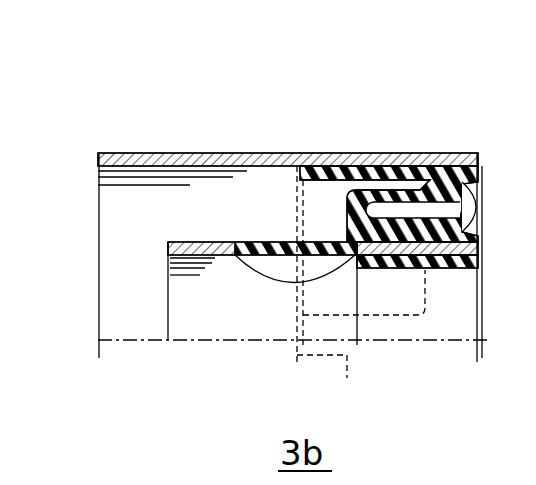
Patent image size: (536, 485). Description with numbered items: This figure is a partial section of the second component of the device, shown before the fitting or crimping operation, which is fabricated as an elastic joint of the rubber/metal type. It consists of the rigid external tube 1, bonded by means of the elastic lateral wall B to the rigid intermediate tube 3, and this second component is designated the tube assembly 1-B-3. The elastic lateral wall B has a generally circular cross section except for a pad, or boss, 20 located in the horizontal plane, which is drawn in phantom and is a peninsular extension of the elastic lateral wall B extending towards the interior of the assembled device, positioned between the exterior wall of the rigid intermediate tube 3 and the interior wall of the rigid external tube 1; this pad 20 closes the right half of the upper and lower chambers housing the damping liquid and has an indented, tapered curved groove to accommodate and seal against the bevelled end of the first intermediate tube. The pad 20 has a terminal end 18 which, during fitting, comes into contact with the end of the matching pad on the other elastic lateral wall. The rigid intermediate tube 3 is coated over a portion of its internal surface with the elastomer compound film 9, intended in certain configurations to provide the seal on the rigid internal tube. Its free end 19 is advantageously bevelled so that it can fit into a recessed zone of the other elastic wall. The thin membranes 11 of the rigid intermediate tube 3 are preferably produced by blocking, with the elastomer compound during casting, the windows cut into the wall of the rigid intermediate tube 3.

The rigid external tube 1 is at (178, 152).
The thin membranes 11 is at (263, 232).
The free end 19 is at (186, 262).
The end of the pad 18 is at (292, 332).
The pad 20 is at (338, 326).
The elastic lateral wall B is at (463, 181).
The rigid intermediate tube 3 is at (465, 250).
The elastomer compound film 9 is at (460, 280).
The tube assembly 1-B-3 is at (372, 115).